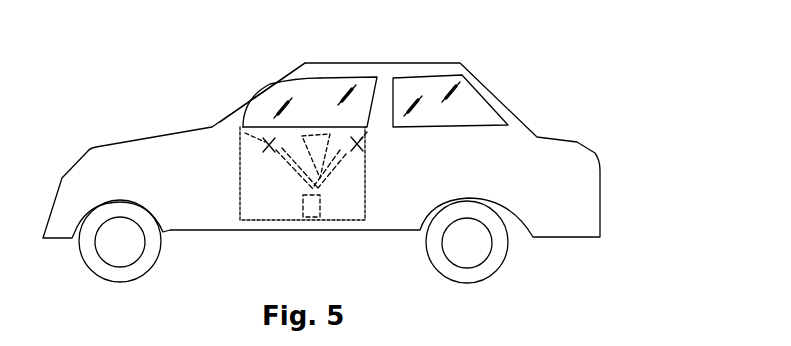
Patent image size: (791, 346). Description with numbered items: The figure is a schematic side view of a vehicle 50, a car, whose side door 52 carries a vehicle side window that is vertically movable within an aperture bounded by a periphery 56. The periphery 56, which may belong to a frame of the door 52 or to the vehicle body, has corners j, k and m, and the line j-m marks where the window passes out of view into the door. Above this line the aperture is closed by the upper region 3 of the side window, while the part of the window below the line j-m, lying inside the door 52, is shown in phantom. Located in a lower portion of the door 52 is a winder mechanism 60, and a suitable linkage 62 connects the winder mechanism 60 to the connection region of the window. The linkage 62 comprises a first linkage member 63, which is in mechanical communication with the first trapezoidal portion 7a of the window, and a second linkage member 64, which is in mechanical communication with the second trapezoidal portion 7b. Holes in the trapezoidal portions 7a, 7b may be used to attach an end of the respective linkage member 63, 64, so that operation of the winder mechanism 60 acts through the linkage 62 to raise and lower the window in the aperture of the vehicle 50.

The vehicle 50 is at (193, 99).
The periphery 56 is at (302, 82).
The upper region 3 is at (327, 93).
The side door 52 is at (263, 215).
The first trapezoidal portion 7a is at (265, 146).
The second trapezoidal portion 7b is at (362, 147).
The first linkage member 63 is at (297, 178).
The linkage 62 is at (342, 172).
The second linkage member 64 is at (315, 156).
The winder mechanism 60 is at (320, 199).